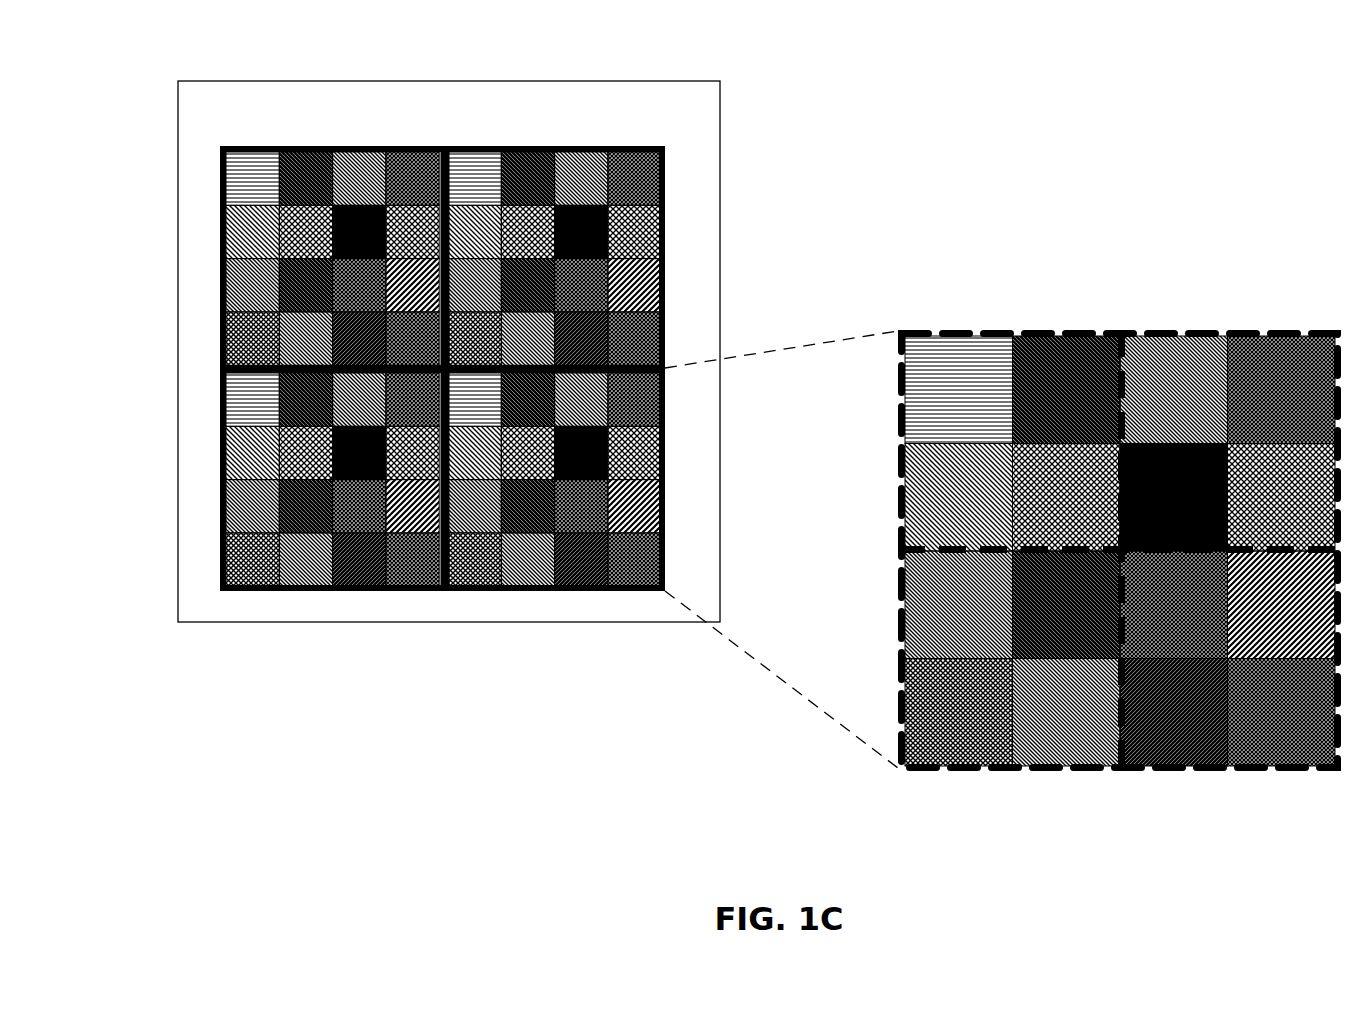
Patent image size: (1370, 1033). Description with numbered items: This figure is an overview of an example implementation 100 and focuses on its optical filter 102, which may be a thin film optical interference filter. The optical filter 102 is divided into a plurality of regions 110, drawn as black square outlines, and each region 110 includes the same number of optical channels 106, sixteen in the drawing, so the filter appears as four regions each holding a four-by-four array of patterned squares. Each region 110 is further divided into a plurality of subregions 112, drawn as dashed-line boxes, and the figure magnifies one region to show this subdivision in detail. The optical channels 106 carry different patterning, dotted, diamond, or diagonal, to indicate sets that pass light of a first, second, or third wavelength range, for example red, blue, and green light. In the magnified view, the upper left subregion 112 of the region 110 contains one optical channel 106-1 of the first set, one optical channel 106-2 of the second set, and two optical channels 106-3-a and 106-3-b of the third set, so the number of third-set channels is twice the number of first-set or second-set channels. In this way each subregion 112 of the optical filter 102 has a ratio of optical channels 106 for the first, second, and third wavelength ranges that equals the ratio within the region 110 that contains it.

The example implementation 100 is at (288, 32).
The optical filter 102 is at (528, 107).
The optical channels 106 is at (625, 277).
The optical channel 106-1 is at (937, 348).
The optical channel 106-2 is at (1037, 460).
The optical channel 106-3-a is at (925, 508).
The optical channel 106-3-b is at (1033, 348).
The regions 110 is at (512, 585).
The subregions 112 is at (1155, 768).